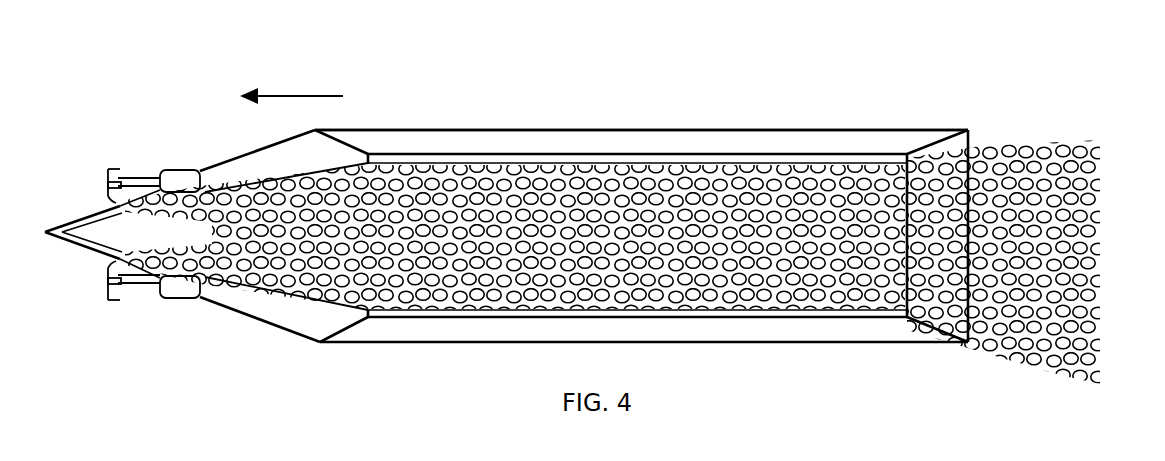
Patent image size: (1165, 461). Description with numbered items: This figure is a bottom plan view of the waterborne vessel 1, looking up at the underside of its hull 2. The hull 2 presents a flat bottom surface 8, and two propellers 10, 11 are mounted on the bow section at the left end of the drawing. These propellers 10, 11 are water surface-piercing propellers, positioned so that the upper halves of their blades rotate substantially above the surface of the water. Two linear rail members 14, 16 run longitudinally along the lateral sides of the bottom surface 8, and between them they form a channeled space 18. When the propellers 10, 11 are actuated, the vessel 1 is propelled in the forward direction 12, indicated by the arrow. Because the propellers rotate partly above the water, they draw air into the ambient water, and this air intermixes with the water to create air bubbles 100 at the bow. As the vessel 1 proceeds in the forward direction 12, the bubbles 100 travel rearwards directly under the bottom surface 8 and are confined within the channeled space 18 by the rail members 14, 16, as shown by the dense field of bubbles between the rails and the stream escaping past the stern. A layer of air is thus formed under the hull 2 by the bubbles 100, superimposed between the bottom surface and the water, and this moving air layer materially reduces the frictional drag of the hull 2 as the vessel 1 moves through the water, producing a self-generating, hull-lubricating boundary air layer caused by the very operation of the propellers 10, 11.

The waterborne vessel 1 is at (890, 125).
The hull 2 is at (583, 140).
The flat bottom surface 8 is at (895, 195).
The propeller 10 is at (117, 168).
The propeller 11 is at (110, 298).
The forward direction 12 is at (313, 93).
The linear rail member 14 is at (765, 160).
The linear rail member 16 is at (763, 313).
The channeled space 18 is at (500, 207).
The air bubbles 100 is at (306, 286).